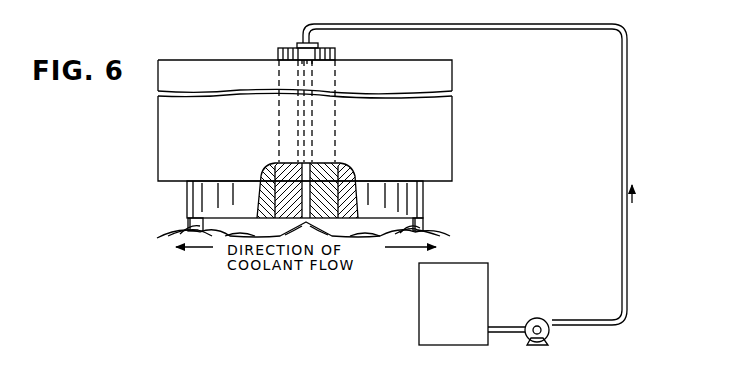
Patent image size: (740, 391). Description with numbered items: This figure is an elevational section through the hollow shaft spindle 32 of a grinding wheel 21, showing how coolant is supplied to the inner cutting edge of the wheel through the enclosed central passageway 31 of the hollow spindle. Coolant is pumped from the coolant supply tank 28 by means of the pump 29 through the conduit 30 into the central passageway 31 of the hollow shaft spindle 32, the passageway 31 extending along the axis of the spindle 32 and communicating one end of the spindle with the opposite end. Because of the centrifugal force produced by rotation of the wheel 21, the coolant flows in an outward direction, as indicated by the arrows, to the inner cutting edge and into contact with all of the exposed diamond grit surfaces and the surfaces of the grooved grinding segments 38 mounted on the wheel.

The grinding wheel 21 is at (431, 203).
The coolant supply tank 28 is at (422, 323).
The pump 29 is at (550, 338).
The conduit 30 is at (627, 72).
The central passageway 31 is at (302, 172).
The hollow shaft spindle 32 is at (290, 186).
The grooved grinding segments 38 is at (437, 233).